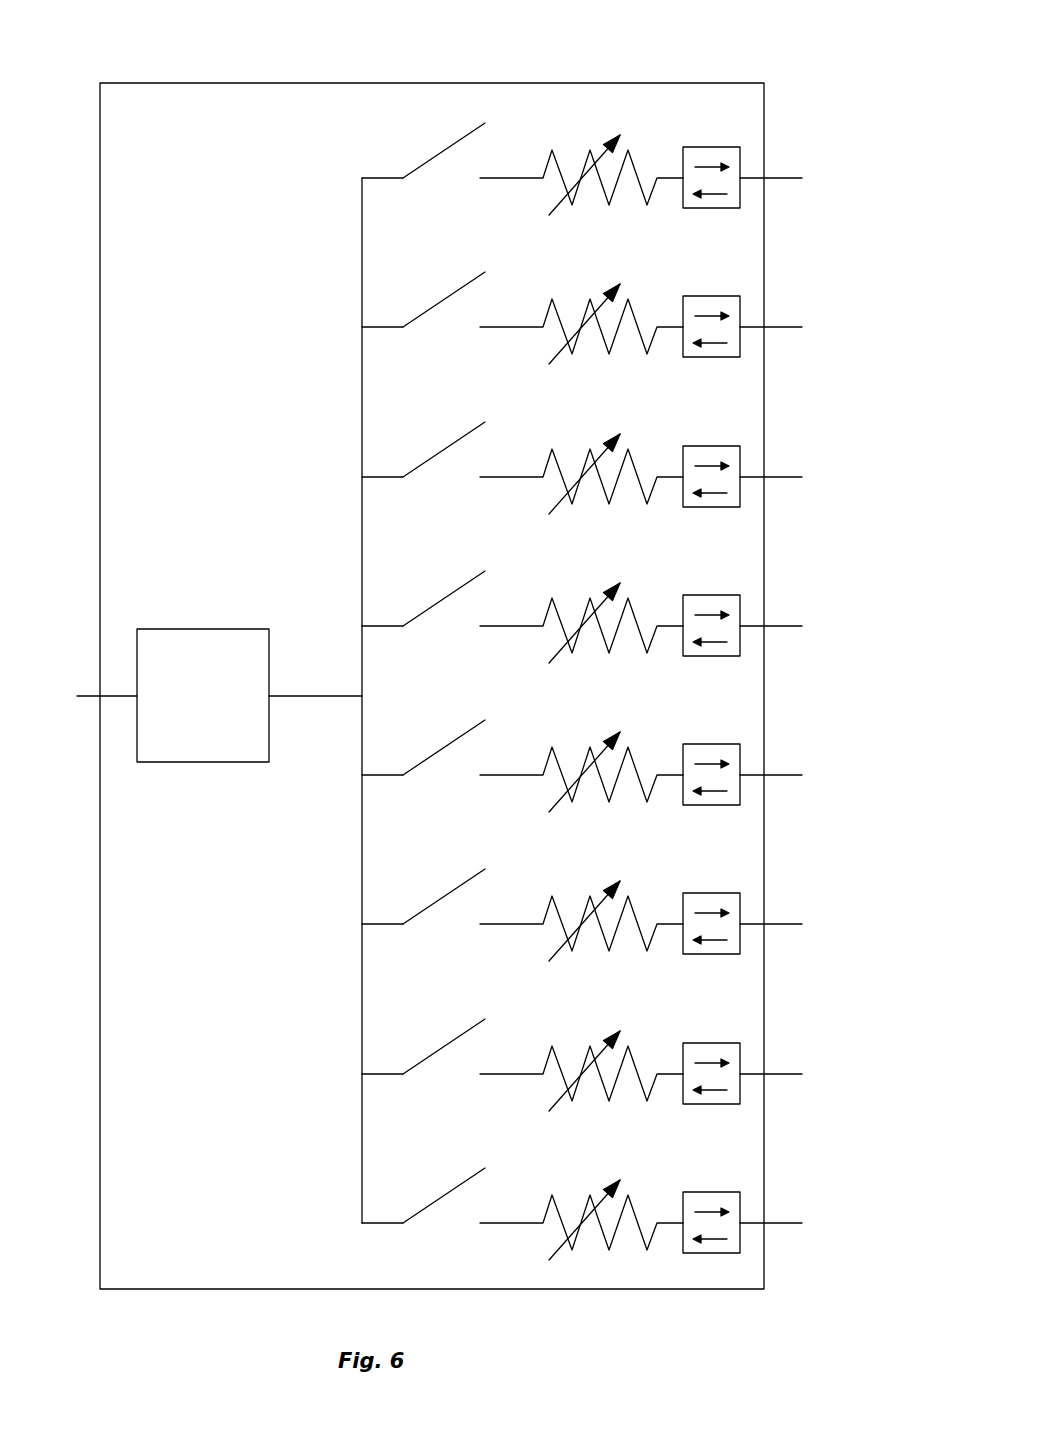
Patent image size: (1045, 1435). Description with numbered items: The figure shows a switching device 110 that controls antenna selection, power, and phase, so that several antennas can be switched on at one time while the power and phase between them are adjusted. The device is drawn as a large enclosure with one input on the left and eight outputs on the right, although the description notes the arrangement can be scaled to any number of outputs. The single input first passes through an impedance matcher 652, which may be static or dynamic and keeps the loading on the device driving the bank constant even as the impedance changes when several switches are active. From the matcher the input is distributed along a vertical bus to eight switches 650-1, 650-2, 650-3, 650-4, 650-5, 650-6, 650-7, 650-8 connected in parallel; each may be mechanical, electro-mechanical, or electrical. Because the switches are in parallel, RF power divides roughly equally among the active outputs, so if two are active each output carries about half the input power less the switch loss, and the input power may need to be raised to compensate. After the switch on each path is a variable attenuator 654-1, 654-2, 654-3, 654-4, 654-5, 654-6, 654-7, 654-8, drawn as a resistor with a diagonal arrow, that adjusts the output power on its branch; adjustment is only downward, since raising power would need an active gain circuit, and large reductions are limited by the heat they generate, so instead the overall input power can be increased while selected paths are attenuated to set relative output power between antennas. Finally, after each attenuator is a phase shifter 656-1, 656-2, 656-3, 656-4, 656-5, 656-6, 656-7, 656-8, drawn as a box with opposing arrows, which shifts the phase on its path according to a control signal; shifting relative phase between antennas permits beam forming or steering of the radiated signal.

The switching device 110 is at (203, 115).
The impedance matcher 652 is at (244, 638).
The switch 650-1 is at (427, 162).
The switch 650-2 is at (423, 293).
The switch 650-3 is at (423, 443).
The switch 650-4 is at (423, 592).
The switch 650-5 is at (423, 741).
The switch 650-6 is at (423, 890).
The switch 650-7 is at (423, 1040).
The switch 650-8 is at (423, 1189).
The variable attenuator 654-1 is at (597, 170).
The variable attenuator 654-2 is at (581, 312).
The variable attenuator 654-3 is at (581, 462).
The variable attenuator 654-4 is at (581, 611).
The variable attenuator 654-5 is at (581, 760).
The variable attenuator 654-6 is at (581, 909).
The variable attenuator 654-7 is at (581, 1059).
The variable attenuator 654-8 is at (581, 1208).
The phase shifter 656-1 is at (712, 145).
The phase shifter 656-2 is at (727, 301).
The phase shifter 656-3 is at (727, 451).
The phase shifter 656-4 is at (727, 600).
The phase shifter 656-5 is at (727, 749).
The phase shifter 656-6 is at (727, 898).
The phase shifter 656-7 is at (727, 1048).
The phase shifter 656-8 is at (727, 1197).